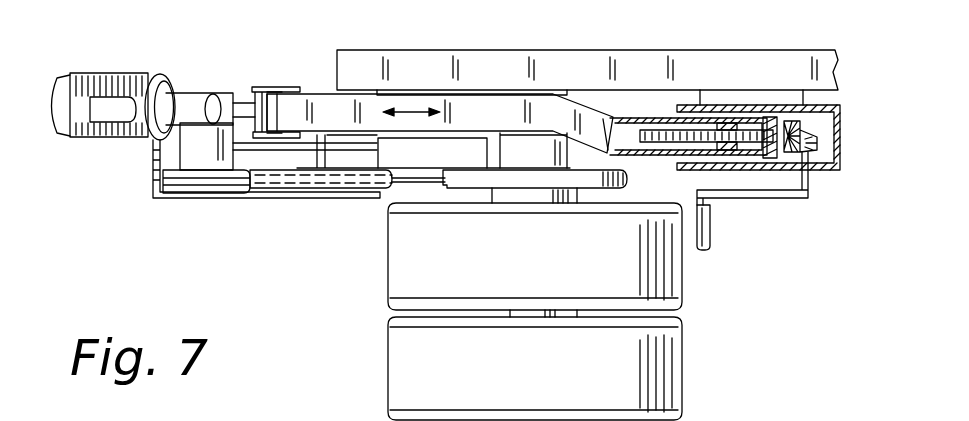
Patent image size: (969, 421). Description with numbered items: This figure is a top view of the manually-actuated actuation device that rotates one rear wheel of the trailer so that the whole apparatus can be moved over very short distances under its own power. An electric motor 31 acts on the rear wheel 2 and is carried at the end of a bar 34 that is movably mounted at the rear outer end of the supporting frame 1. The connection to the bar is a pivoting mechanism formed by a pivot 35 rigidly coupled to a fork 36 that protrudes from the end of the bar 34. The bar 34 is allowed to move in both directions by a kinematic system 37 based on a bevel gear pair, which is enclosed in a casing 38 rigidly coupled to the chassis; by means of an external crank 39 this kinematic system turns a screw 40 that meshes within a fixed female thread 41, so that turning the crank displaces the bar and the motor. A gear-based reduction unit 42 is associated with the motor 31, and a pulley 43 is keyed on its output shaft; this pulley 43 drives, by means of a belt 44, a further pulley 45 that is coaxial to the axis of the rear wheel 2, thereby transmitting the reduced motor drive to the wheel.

The supporting frame 1 is at (565, 65).
The rear wheel 2 is at (650, 380).
The electric motor 31 is at (100, 87).
The bar 34 is at (331, 107).
The pivot 35 is at (255, 82).
The fork 36 is at (280, 88).
The kinematic system 37 is at (793, 127).
The casing 38 is at (843, 143).
The external crank 39 is at (763, 200).
The screw 40 is at (753, 112).
The fixed female thread 41 is at (773, 113).
The gear-based reduction unit 42 is at (198, 157).
The pulley 43 is at (237, 187).
The belt 44 is at (263, 188).
The pulley 45 is at (460, 190).